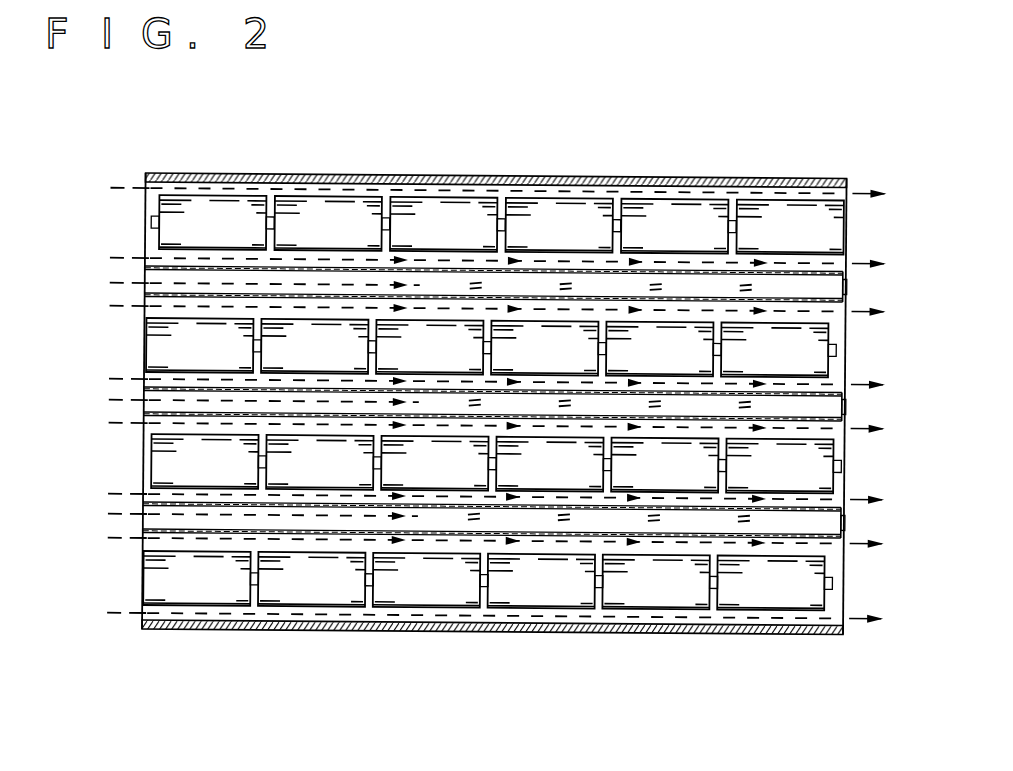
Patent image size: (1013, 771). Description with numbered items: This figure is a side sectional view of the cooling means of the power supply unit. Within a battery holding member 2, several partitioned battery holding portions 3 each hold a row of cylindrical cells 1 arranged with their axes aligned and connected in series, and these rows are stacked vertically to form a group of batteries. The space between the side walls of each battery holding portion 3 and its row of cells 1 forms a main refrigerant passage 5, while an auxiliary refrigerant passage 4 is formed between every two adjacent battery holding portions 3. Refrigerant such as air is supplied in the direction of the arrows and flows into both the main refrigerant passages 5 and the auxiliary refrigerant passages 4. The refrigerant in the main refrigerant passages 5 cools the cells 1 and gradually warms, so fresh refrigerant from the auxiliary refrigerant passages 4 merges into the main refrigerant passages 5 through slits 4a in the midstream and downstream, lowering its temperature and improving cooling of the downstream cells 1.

The cylindrical cell 1 is at (227, 213).
The battery holding member 2 is at (607, 178).
The battery holding portion 3 is at (142, 585).
The auxiliary refrigerant passage 4 is at (440, 518).
The slit 4a is at (735, 505).
The main refrigerant passage 5 is at (313, 495).